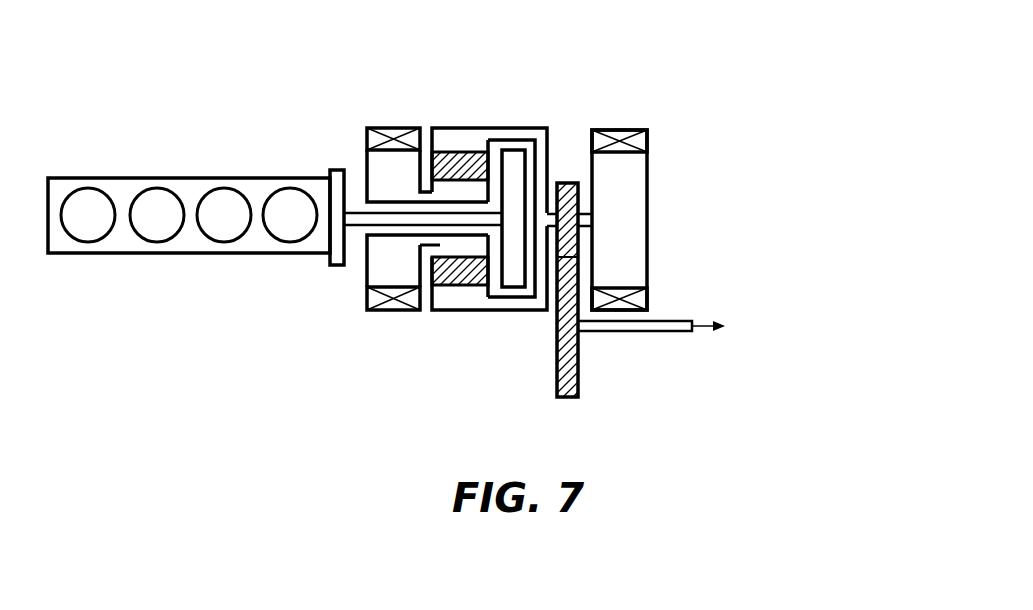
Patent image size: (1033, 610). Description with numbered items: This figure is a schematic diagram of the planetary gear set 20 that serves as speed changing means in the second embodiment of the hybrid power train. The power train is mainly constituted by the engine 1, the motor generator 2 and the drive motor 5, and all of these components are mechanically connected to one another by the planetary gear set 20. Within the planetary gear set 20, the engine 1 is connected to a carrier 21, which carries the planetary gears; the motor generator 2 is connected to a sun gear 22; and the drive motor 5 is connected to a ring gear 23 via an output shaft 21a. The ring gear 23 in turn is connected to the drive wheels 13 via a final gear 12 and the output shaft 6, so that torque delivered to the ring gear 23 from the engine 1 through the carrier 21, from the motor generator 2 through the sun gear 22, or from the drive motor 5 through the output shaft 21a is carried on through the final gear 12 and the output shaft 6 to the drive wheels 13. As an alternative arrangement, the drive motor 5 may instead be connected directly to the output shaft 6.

The engine 1 is at (108, 178).
The motor generator 2 is at (367, 139).
The planetary gear set 20 is at (476, 122).
The carrier 21 is at (512, 287).
The output shaft 21a is at (553, 210).
The sun gear 22 is at (438, 245).
The ring gear 23 is at (443, 308).
The drive motor 5 is at (620, 130).
The final gear 12 is at (576, 383).
The output shaft 6 is at (676, 332).
The drive wheels 13 is at (800, 328).